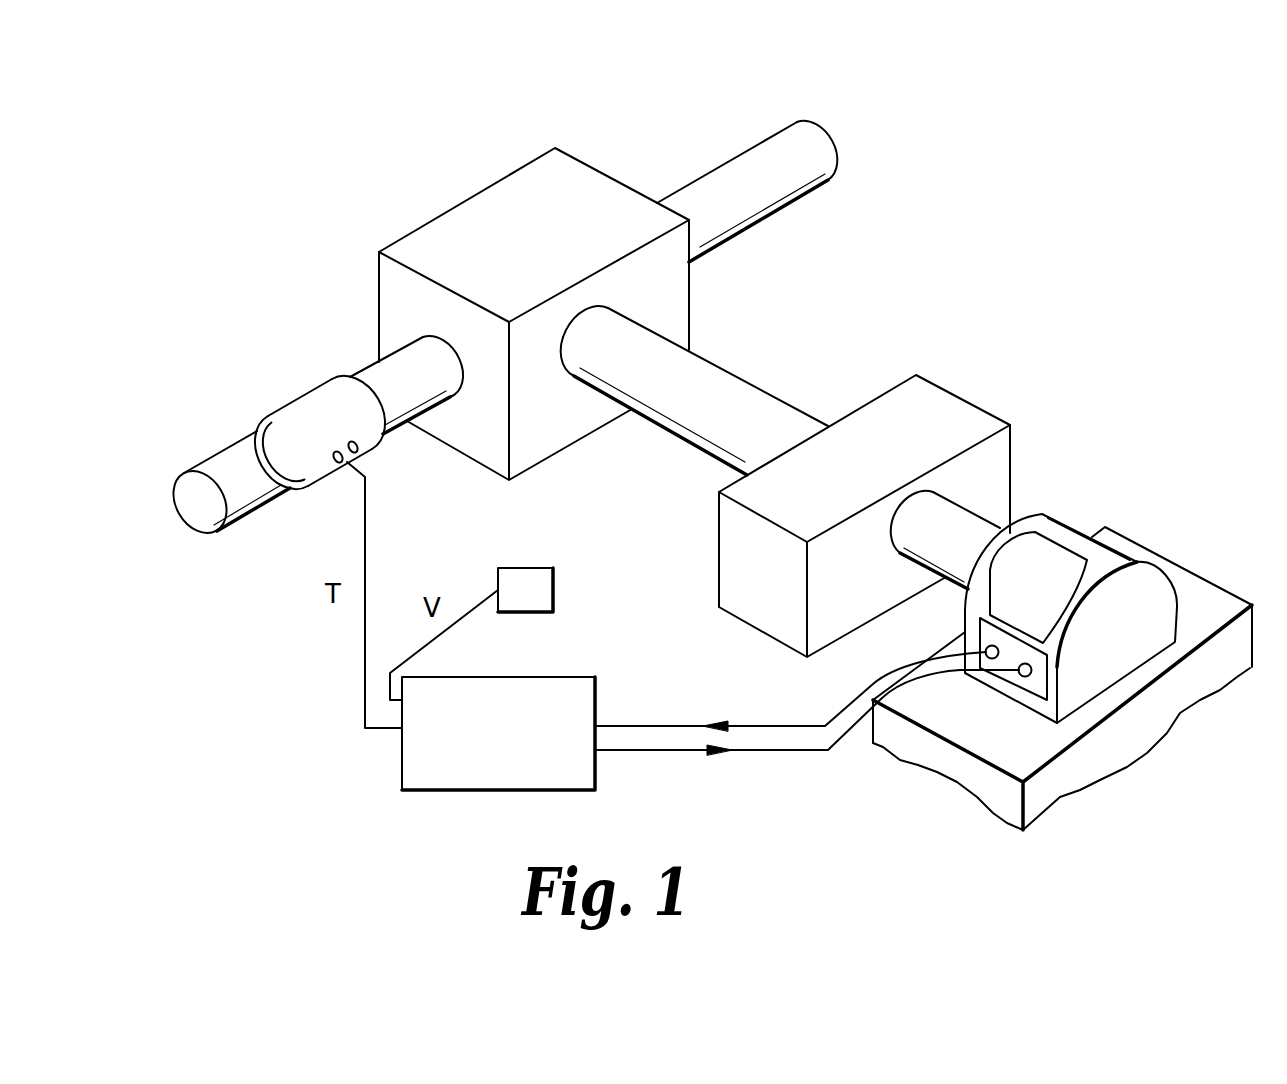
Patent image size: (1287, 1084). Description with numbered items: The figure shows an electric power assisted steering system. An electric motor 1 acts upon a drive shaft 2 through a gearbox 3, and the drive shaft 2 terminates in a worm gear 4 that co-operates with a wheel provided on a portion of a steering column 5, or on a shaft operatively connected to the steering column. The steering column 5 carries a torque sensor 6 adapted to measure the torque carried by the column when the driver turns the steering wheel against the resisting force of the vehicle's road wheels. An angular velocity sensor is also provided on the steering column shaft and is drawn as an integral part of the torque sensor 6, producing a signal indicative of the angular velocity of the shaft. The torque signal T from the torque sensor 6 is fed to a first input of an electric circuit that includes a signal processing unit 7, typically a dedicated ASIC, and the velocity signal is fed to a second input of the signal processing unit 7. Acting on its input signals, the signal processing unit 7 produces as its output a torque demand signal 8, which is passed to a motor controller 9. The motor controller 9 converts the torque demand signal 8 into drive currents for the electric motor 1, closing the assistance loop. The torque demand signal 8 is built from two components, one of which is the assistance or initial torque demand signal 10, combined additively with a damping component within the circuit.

The electric motor 1 is at (1139, 596).
The drive shaft 2 is at (733, 390).
The gearbox 3 is at (870, 474).
The worm gear 4 is at (533, 244).
The steering column 5 is at (697, 160).
The torque sensor 6 is at (307, 417).
The signal processing unit 7 is at (479, 746).
The torque demand signal 8 is at (800, 752).
The motor controller 9 is at (1040, 690).
The assistance torque demand signal 10 is at (538, 593).